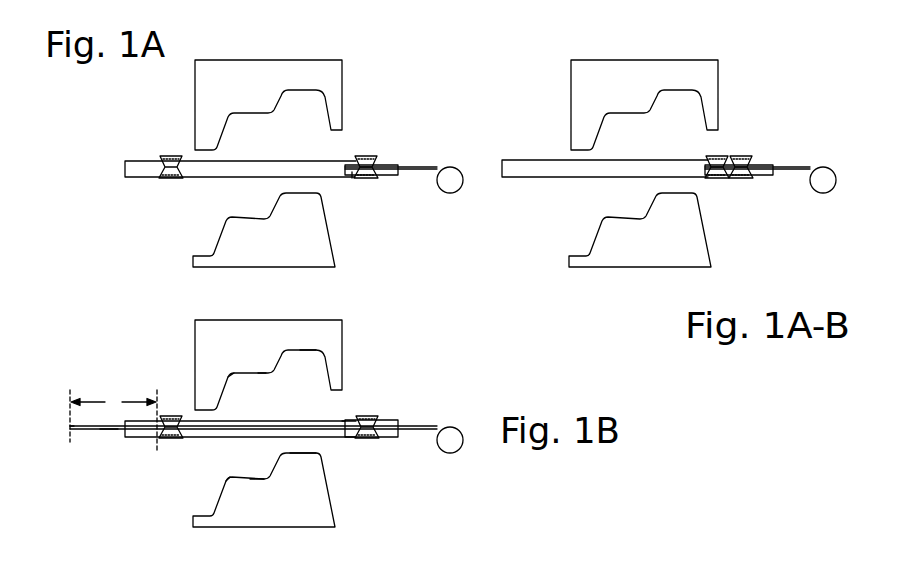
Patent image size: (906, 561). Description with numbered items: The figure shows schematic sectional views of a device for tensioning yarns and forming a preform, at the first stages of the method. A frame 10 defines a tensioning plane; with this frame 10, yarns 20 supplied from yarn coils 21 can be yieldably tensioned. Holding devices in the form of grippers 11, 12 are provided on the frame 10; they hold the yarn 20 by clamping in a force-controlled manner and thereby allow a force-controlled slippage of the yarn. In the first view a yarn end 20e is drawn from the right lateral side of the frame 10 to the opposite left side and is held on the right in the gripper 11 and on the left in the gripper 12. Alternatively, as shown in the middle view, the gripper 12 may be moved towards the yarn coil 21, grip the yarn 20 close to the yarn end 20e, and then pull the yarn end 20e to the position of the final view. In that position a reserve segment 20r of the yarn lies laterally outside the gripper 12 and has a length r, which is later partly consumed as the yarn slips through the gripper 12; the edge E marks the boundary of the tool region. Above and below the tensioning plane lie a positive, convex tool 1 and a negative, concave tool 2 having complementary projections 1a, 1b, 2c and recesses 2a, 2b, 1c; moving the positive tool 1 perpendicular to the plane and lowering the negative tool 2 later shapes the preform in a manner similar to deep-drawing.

In FIG. 1A, the positive tool 1 is at (348, 248).
In FIG. 1A-B, the positive tool 1 is at (680, 249).
In FIG. 1B, the positive tool 1 is at (350, 506).
In FIG. 1B, the projection 1a is at (300, 453).
In FIG. 1B, the projection 1b is at (226, 475).
In FIG. 1B, the recess 1c is at (258, 478).
In FIG. 1A, the negative tool 2 is at (230, 93).
In FIG. 1A-B, the negative tool 2 is at (611, 93).
In FIG. 1B, the negative tool 2 is at (231, 355).
In FIG. 1B, the recess 2a is at (310, 351).
In FIG. 1B, the recess 2b is at (229, 373).
In FIG. 1B, the projection 2c is at (262, 373).
In FIG. 1A, the frame 10 is at (396, 158).
In FIG. 1A-B, the frame 10 is at (767, 158).
In FIG. 1B, the frame 10 is at (397, 418).
In FIG. 1A, the gripper 11 is at (367, 156).
In FIG. 1A-B, the gripper 11 is at (742, 156).
In FIG. 1B, the gripper 11 is at (368, 416).
In FIG. 1A, the gripper 12 is at (170, 156).
In FIG. 1A-B, the gripper 12 is at (718, 156).
In FIG. 1B, the gripper 12 is at (172, 416).
In FIG. 1A, the yarn 20 is at (433, 167).
In FIG. 1A-B, the yarn 20 is at (808, 167).
In FIG. 1B, the yarn 20 is at (431, 427).
In FIG. 1A, the yarn end 20e is at (352, 178).
In FIG. 1B, the yarn end 20e is at (71, 430).
In FIG. 1B, the reserve segment 20r is at (108, 430).
In FIG. 1A, the yarn coil 21 is at (448, 191).
In FIG. 1A-B, the yarn coil 21 is at (820, 191).
In FIG. 1B, the yarn coil 21 is at (457, 451).
In FIG. 1B, the edge of die E is at (342, 424).
In FIG. 1B, the length of the reserve segment r is at (113, 421).